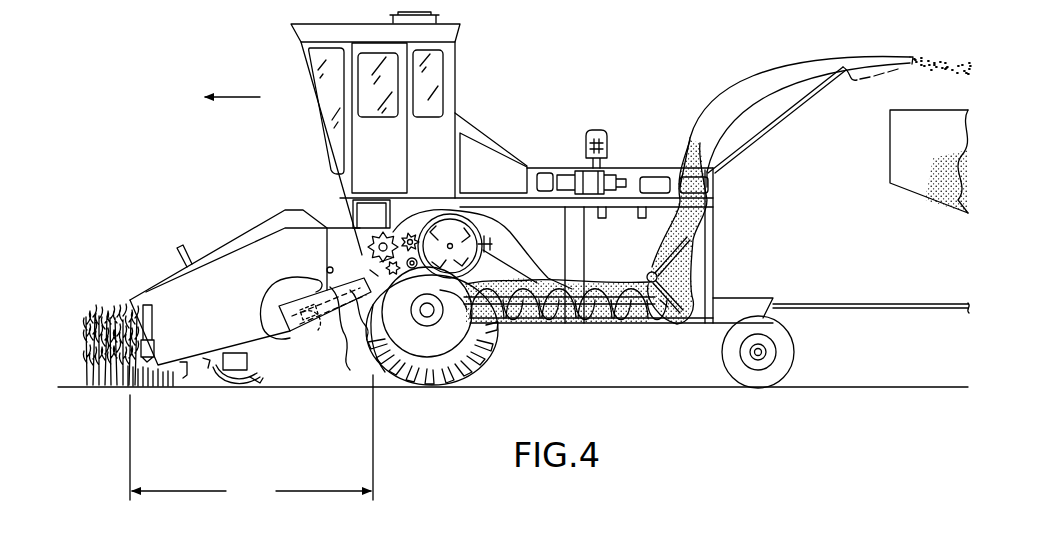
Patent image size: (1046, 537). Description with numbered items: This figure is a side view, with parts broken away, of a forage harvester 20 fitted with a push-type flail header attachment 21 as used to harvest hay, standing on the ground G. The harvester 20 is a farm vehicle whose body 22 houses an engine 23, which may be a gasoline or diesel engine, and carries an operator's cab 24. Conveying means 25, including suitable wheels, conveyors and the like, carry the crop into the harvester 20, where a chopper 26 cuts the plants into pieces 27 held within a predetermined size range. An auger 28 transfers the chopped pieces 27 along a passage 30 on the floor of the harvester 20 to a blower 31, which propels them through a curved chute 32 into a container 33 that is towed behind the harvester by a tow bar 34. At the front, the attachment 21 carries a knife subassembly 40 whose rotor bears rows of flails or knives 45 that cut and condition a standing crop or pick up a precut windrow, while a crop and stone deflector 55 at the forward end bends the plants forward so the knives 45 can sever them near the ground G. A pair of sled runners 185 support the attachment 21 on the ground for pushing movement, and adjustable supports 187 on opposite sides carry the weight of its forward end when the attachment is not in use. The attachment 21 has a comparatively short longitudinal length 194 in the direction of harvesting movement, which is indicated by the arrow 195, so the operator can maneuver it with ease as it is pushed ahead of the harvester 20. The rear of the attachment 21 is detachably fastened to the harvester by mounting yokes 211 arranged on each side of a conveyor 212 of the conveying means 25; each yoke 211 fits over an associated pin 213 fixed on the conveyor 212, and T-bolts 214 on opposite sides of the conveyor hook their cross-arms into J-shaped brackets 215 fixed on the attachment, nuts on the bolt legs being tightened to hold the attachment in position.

The forage harvester 20 is at (600, 95).
The attachment 21 is at (213, 228).
The body 22 is at (713, 232).
The engine 23 is at (632, 168).
The operator's cab 24 is at (455, 80).
The conveying means 25 is at (375, 220).
The chopper 26 is at (458, 214).
The pieces 27 is at (590, 312).
The auger 28 is at (547, 325).
The passage 30 is at (579, 289).
The blower 31 is at (670, 278).
The curved chute 32 is at (772, 78).
The container 33 is at (895, 138).
The tow bar 34 is at (878, 304).
The knife subassembly 40 is at (201, 380).
The knives 45 is at (190, 375).
The crop and stone deflector 55 is at (127, 377).
The sled runners 185 is at (257, 383).
The adjustable supports 187 is at (136, 316).
The axial length 194 is at (251, 441).
The arrow 195 is at (232, 97).
The mounting yokes 211 is at (347, 263).
The conveyor 212 is at (413, 365).
The pin 213 is at (308, 342).
The T-bolts 214 is at (350, 313).
The J-shaped bracket 215 is at (326, 269).
The ground G is at (897, 387).